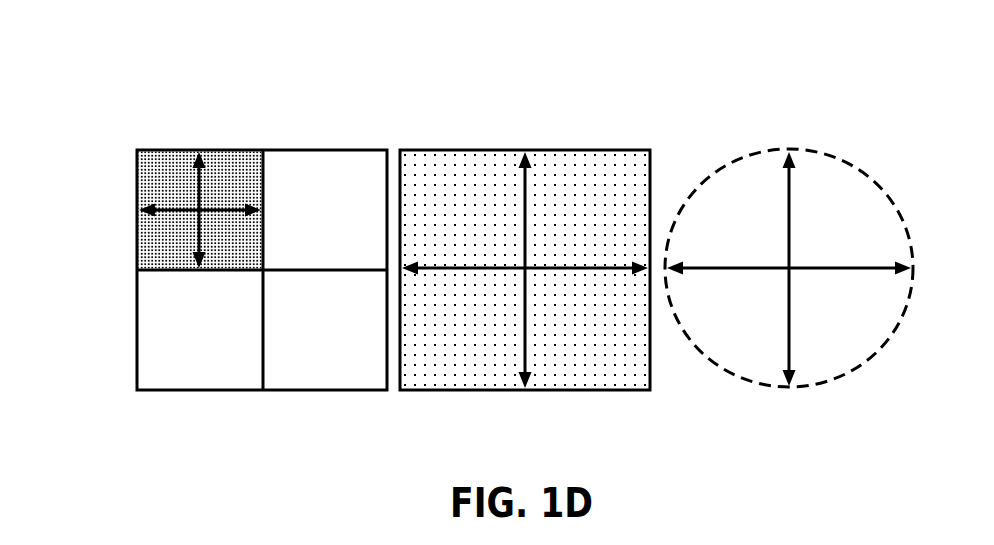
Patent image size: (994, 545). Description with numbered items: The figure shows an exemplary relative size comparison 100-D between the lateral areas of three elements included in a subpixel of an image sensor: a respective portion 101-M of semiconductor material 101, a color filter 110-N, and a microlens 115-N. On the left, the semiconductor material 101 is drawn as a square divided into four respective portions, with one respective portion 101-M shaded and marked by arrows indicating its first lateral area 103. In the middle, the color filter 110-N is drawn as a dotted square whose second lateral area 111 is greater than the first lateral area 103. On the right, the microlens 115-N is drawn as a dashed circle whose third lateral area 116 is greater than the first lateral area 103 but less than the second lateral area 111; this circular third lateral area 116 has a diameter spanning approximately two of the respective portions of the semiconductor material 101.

The relative size comparison 100-D is at (84, 55).
The semiconductor material 101 is at (387, 139).
The respective portion of semiconductor material 101-M is at (130, 168).
The first lateral area 103 is at (200, 210).
The color filter 110-N is at (599, 145).
The second lateral area 111 is at (525, 270).
The microlens 115-N is at (729, 146).
The third lateral area 116 is at (789, 269).